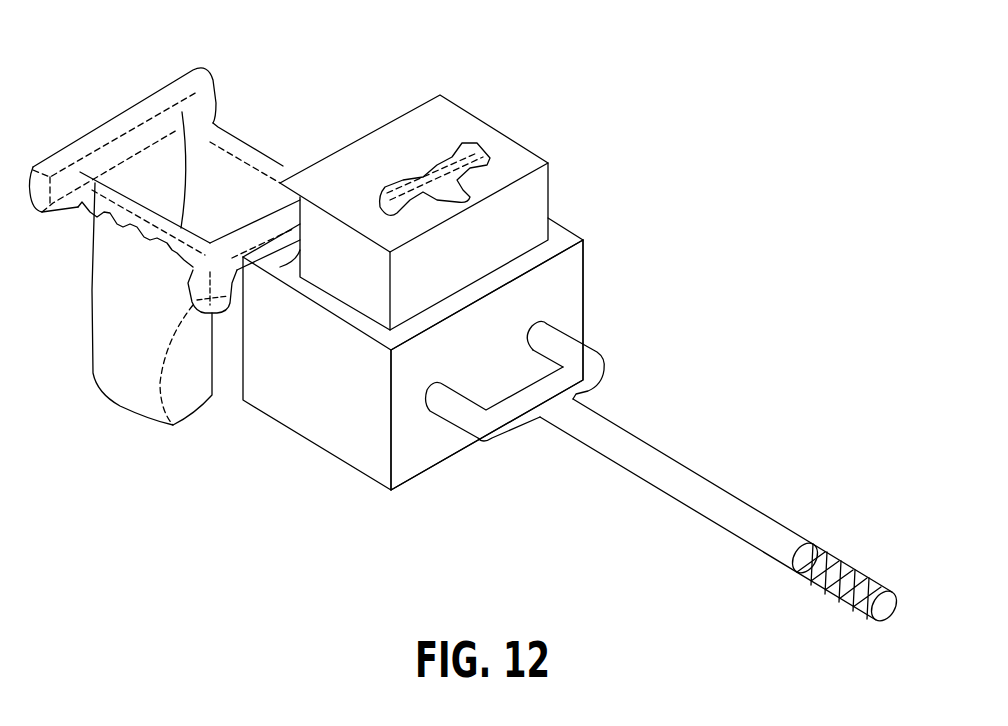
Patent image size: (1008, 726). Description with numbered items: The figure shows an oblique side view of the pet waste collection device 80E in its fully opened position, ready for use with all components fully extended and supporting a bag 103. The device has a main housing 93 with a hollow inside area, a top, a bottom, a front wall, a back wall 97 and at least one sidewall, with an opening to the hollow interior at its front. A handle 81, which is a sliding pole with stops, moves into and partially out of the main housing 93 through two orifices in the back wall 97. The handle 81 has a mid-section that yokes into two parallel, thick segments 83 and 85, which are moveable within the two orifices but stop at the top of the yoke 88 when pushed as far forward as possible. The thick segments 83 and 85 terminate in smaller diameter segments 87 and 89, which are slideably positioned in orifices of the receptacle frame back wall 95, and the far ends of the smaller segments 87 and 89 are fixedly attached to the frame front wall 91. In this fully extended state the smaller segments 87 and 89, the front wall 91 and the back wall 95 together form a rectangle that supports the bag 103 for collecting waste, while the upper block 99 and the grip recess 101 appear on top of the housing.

The device 80E is at (622, 98).
The handle 81 is at (741, 505).
The thick segment 83 is at (554, 340).
The thick segment 85 is at (234, 306).
The smaller segment 87 is at (244, 142).
The yoke 88 is at (517, 409).
The smaller segment 89 is at (133, 242).
The frame front wall 91 is at (130, 107).
The main housing 93 is at (561, 226).
The receptacle frame back wall 95 is at (173, 425).
The back wall 97 is at (568, 272).
The upper block 99 is at (519, 157).
The grip recess 101 is at (435, 157).
The bag 103 is at (128, 416).